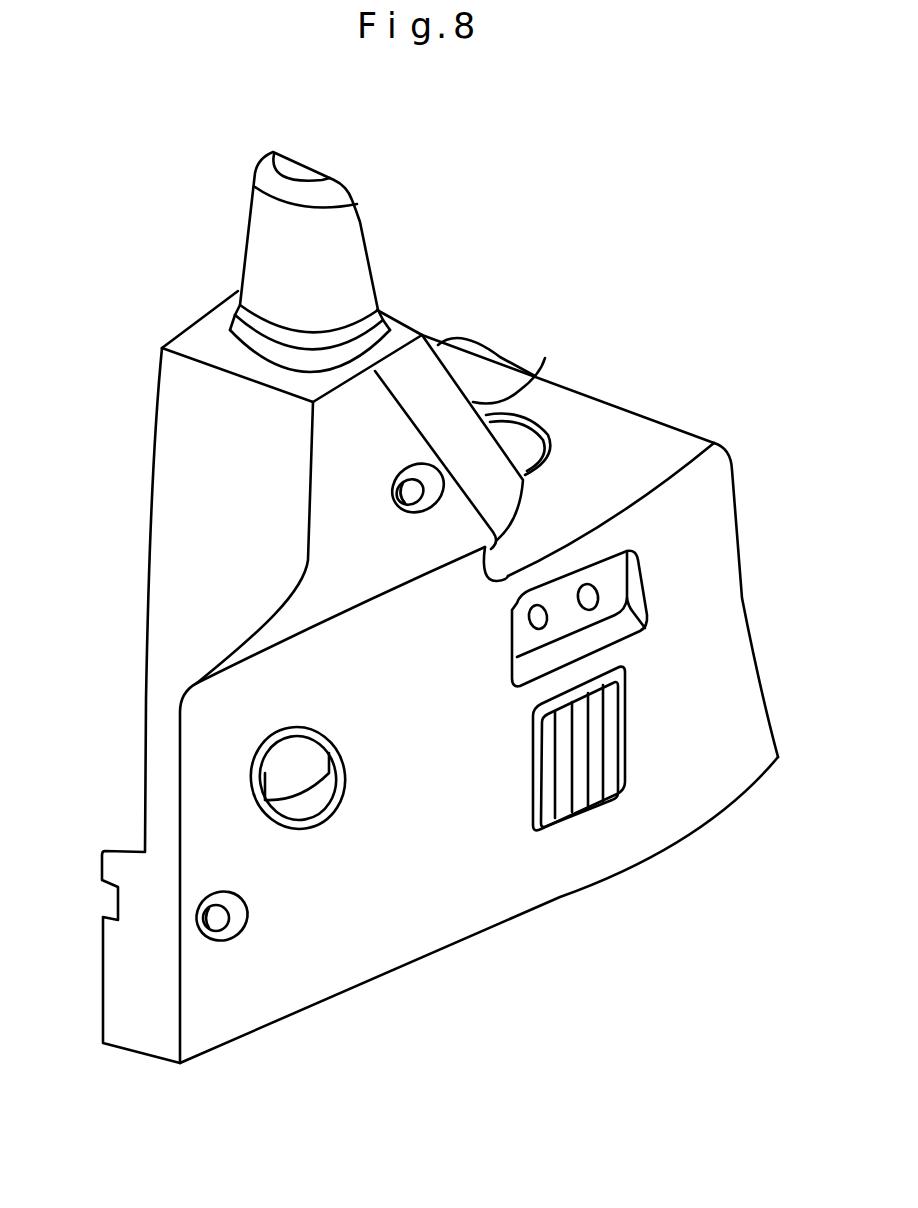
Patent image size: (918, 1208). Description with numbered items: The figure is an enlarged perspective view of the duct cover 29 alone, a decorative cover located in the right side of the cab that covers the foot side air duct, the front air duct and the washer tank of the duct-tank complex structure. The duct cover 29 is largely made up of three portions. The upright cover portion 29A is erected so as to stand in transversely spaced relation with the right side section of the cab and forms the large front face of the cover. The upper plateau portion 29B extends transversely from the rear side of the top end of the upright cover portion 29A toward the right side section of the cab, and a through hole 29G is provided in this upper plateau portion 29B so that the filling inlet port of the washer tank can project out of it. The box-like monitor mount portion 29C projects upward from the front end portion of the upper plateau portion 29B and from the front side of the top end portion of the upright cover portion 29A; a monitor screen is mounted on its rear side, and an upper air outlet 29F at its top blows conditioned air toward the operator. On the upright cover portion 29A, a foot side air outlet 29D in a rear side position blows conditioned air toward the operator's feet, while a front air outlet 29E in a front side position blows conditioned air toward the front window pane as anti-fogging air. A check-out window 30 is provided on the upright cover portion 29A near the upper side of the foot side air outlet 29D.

The duct cover 29 is at (580, 405).
The upright cover portion 29A is at (447, 905).
The upper plateau portion 29B is at (640, 428).
The monitor mount portion 29C is at (167, 520).
The foot side air outlet 29D is at (597, 777).
The front air outlet 29E is at (282, 772).
The upper air outlet 29F is at (363, 228).
The through hole 29G is at (510, 417).
The check-out window 30 is at (590, 597).